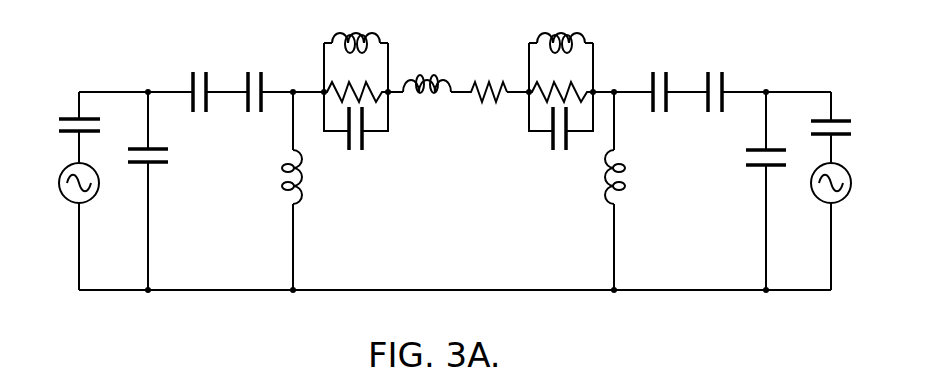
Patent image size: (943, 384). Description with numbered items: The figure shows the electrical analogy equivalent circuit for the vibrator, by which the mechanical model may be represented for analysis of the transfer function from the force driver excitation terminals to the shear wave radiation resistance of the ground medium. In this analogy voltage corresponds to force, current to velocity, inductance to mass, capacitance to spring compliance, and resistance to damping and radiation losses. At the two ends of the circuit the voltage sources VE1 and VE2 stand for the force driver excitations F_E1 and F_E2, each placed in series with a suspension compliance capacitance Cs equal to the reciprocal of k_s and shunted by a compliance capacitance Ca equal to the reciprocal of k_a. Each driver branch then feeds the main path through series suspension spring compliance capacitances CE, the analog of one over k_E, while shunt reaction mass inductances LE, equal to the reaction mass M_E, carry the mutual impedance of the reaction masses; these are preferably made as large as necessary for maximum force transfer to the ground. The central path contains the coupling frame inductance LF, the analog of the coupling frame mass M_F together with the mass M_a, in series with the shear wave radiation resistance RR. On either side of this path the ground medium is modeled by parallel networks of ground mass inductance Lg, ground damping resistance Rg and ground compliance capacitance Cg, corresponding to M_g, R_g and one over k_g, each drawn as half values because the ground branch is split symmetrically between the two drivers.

The first voltage source VE1 is at (52, 158).
The second voltage source VE2 is at (862, 163).
The suspension compliance capacitance Cs is at (458, 112).
The compliance capacitance Ca is at (457, 191).
The suspension spring compliance capacitance CE is at (460, 78).
The reaction mass inductance LE is at (454, 191).
The ground mass inductance Lg is at (458, 49).
The ground damping resistance Rg is at (458, 82).
The ground compliance capacitance Cg is at (458, 136).
The coupling frame inductance LF is at (432, 73).
The shear wave radiation resistance RR is at (487, 77).